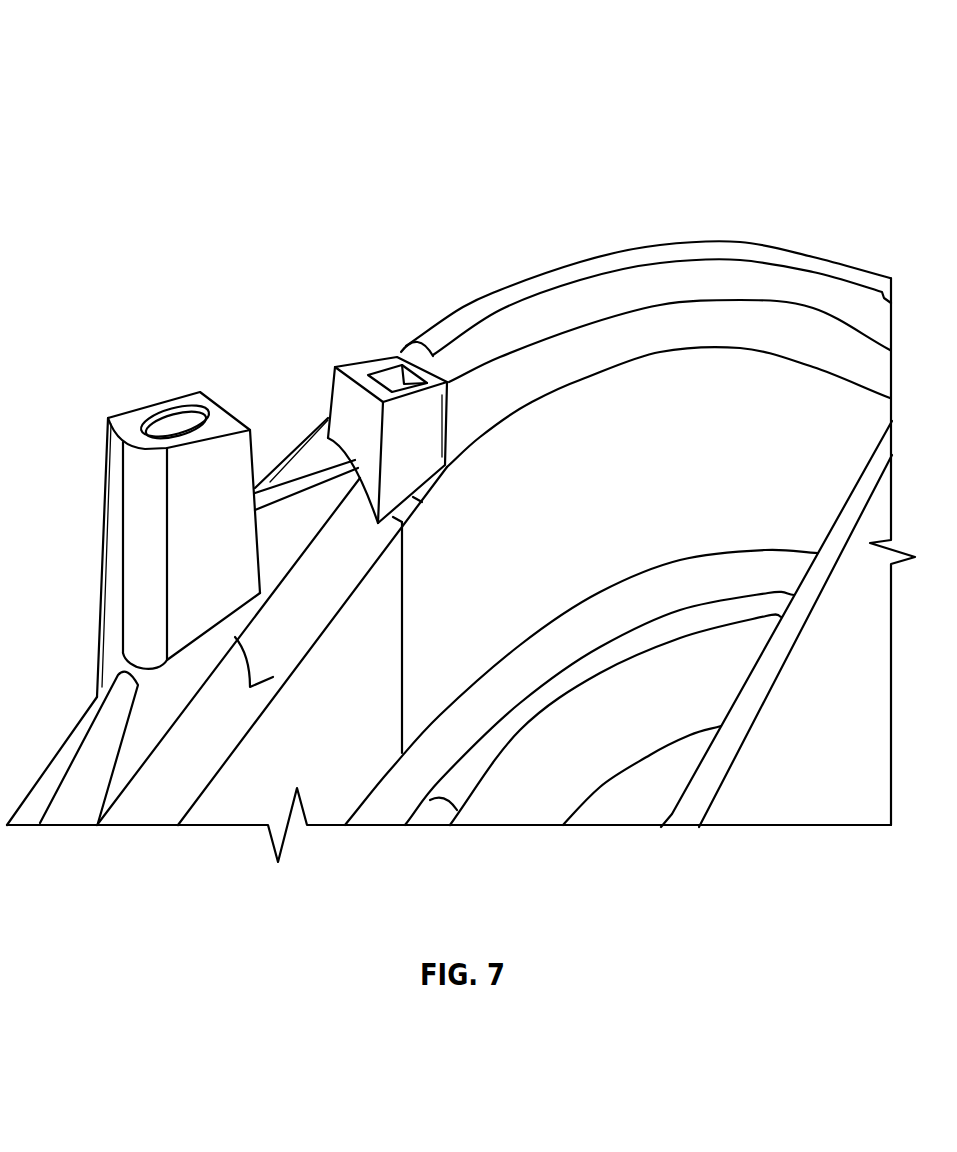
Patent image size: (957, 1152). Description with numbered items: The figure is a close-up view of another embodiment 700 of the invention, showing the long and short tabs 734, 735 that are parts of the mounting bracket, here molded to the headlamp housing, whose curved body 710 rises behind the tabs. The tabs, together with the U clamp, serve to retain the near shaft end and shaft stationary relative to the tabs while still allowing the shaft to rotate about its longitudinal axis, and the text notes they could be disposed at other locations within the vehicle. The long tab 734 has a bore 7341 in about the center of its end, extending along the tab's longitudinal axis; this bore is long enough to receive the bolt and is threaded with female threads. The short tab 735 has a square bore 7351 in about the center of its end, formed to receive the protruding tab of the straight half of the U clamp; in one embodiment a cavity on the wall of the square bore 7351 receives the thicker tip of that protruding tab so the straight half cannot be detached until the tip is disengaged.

The embodiment 700 is at (482, 105).
The curved body portion 710 is at (697, 382).
The long tab 734 is at (165, 510).
The bore 7341 is at (167, 413).
The short tab 735 is at (368, 397).
The square bore 7351 is at (375, 373).